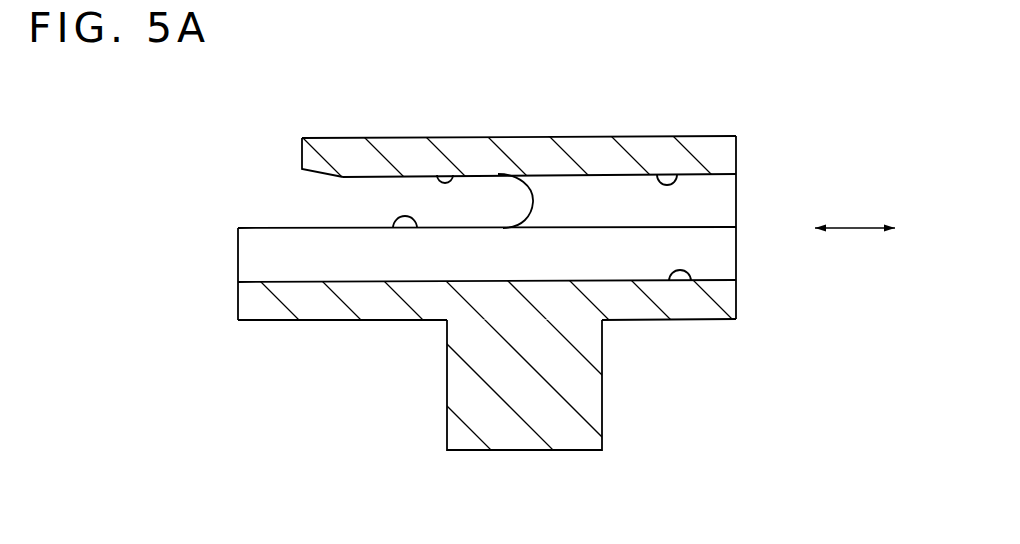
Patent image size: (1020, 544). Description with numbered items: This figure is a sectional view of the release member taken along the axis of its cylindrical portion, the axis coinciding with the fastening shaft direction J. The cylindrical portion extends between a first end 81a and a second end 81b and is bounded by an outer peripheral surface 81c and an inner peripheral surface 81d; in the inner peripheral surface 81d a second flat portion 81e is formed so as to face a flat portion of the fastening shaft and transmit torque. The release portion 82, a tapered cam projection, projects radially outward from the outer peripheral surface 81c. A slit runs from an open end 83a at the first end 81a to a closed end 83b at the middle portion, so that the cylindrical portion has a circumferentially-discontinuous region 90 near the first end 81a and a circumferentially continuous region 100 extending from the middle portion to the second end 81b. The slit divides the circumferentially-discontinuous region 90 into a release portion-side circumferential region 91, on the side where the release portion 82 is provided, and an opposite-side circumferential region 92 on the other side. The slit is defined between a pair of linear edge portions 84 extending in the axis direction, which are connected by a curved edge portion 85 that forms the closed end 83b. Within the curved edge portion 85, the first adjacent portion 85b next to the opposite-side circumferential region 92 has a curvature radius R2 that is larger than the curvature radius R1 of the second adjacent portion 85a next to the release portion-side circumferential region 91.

The circumferentially continuous region 100 is at (602, 150).
The circumferentially-discontinuous region 90 is at (417, 95).
The release portion-side circumferential region 91 is at (353, 293).
The opposite-side circumferential region 92 is at (357, 147).
The first end 81a is at (238, 255).
The second end 81b is at (737, 194).
The outer peripheral surface 81c is at (710, 136).
The inner peripheral surface 81d is at (712, 280).
The second flat portion 81e is at (661, 173).
The release portion 82 is at (522, 437).
The open end 83a is at (337, 203).
The closed end 83b is at (624, 233).
The linear edge portion 84 is at (449, 175).
The curved edge portion 85 is at (535, 195).
The second adjacent portion 85a is at (525, 229).
The first adjacent portion 85b is at (519, 173).
The curvature radius of the second adjacent portion R1 is at (525, 220).
The curvature radius of the first adjacent portion R2 is at (508, 183).
The fastening shaft direction J is at (855, 230).